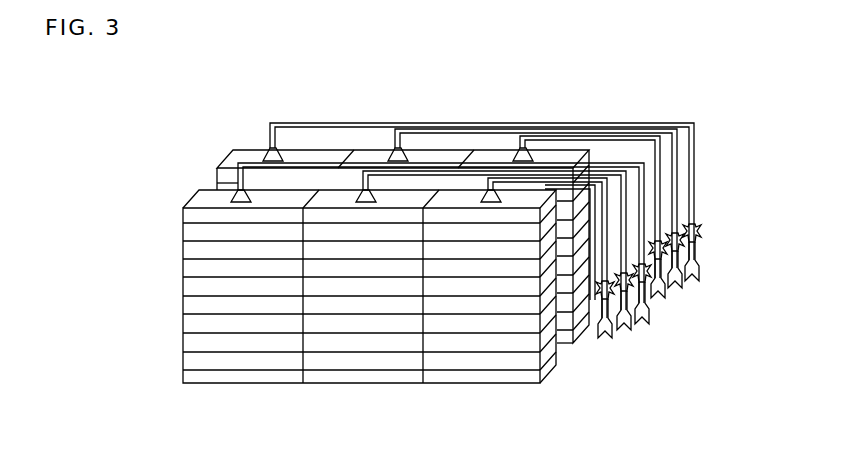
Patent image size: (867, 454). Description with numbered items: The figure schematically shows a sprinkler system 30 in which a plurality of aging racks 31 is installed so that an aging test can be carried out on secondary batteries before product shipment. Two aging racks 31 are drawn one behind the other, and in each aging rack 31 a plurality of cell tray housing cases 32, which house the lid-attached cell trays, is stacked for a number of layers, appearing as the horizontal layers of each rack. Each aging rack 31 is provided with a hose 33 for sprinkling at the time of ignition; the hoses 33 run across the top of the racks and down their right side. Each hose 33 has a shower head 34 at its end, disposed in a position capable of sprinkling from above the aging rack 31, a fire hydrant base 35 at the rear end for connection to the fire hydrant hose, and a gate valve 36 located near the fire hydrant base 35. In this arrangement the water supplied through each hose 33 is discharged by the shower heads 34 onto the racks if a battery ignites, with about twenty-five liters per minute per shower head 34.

The sprinkler system 30 is at (616, 46).
The aging rack 31 is at (215, 149).
The cell tray housing case 32 is at (184, 232).
The hose for sprinkling 33 is at (604, 129).
The shower head 34 is at (270, 147).
The fire hydrant base 35 is at (602, 347).
The gate valve 36 is at (701, 238).